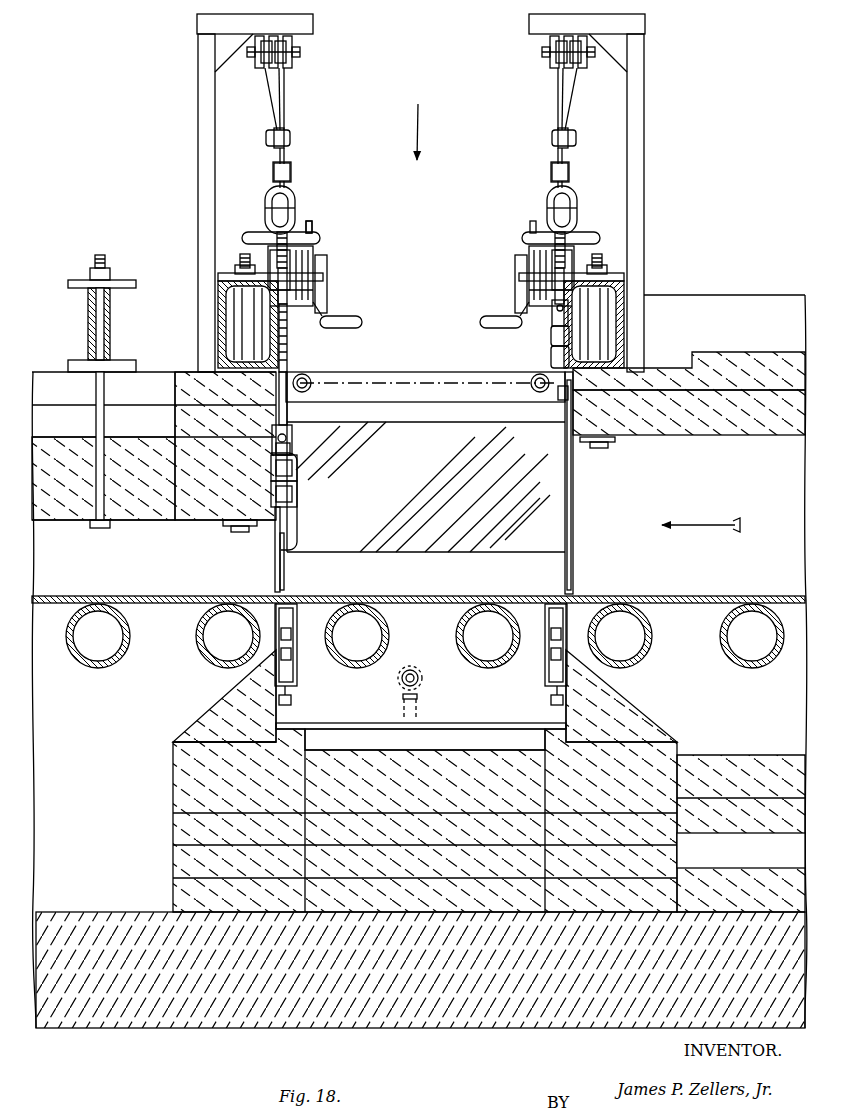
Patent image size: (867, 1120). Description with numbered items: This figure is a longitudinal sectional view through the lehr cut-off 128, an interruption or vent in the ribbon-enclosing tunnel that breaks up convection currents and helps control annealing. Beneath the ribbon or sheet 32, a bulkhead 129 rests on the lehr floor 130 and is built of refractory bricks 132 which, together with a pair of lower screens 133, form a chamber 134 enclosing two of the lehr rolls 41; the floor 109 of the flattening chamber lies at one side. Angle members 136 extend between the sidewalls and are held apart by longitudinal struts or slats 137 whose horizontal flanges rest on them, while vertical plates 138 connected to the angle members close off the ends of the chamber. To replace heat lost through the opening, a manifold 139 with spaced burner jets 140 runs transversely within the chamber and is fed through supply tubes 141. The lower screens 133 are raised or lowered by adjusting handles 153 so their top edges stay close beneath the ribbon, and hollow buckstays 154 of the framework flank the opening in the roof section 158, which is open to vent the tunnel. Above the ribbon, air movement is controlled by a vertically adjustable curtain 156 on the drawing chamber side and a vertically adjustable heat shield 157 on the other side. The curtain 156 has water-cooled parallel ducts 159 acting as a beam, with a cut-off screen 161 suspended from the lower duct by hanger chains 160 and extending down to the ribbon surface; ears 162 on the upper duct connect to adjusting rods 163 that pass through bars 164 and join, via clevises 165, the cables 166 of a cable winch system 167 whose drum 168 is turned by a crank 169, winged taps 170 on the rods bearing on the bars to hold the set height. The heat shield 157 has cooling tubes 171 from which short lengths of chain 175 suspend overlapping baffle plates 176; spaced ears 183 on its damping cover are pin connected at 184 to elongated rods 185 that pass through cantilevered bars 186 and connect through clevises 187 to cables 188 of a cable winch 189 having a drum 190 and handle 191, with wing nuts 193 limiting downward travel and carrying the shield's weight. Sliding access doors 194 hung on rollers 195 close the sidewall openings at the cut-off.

The ribbon or sheet 32 is at (152, 596).
The lehr rolls 41 is at (200, 652).
The floor 109 is at (713, 757).
The lehr cut-off 128 is at (420, 119).
The bulkhead 129 is at (172, 741).
The lehr floor 130 is at (89, 915).
The refractory bricks 132 is at (172, 763).
The lower screens 133 is at (297, 651).
The chamber 134 is at (386, 670).
The angle members 136 is at (289, 705).
The struts or slats 137 is at (443, 738).
The vertical plates 138 is at (265, 653).
The manifold 139 is at (423, 682).
The burner jets 140 is at (420, 673).
The supply tubes 141 is at (407, 708).
The adjusting handles 153 is at (320, 239).
The hollow buckstays 154 is at (218, 320).
The vertically adjustable curtain 156 is at (565, 440).
The vertically adjustable heat shield 157 is at (317, 512).
The roof section 158 is at (400, 367).
The parallel ducts 159 is at (555, 357).
The roller bracket 160 is at (560, 393).
The cut-off screen 161 is at (566, 512).
The ears 162 is at (557, 308).
The adjusting rods 163 is at (545, 246).
The bars 164 is at (542, 278).
The clevises 165 is at (574, 198).
The cables 166 is at (558, 95).
The cable winch system 167 is at (537, 197).
The drum 168 is at (532, 222).
The crank 169 is at (500, 323).
The winged taps 170 is at (519, 267).
The cooling tubes 171 is at (297, 467).
The short lengths of chain 175 is at (277, 533).
The baffle plates 176 is at (280, 562).
The spaced ears 183 is at (290, 447).
The pin connection 184 is at (290, 430).
The elongated rods 185 is at (287, 338).
The cantilevered bars 186 is at (298, 277).
The clevises 187 is at (295, 205).
The cables 188 is at (268, 87).
The cable winch 189 is at (305, 177).
The drum 190 is at (312, 224).
The handle 191 is at (342, 323).
The wing nuts 193 is at (327, 263).
The sliding access doors 194 is at (414, 440).
The rollers 195 is at (308, 374).